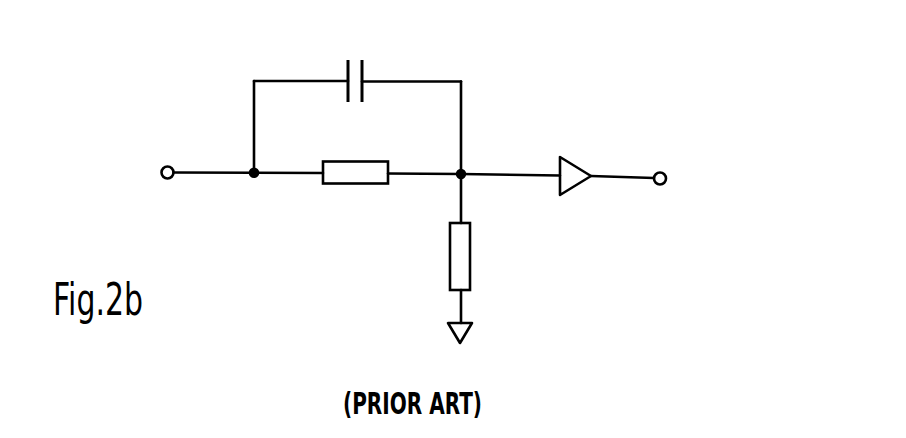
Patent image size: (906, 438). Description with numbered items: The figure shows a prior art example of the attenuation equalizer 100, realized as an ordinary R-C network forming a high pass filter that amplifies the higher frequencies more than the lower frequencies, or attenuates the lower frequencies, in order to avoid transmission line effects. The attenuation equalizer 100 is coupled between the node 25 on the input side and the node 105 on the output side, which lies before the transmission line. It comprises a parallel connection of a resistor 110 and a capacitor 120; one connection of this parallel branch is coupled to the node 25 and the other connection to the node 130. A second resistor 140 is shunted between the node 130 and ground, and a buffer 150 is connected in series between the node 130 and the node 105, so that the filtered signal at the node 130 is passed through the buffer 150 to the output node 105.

The attenuation equalizer 100 is at (514, 114).
The node 25 is at (169, 179).
The node 105 is at (663, 172).
The resistor 110 is at (370, 184).
The capacitor 120 is at (363, 67).
The node 130 is at (461, 174).
The second resistor 140 is at (468, 268).
The buffer 150 is at (578, 187).